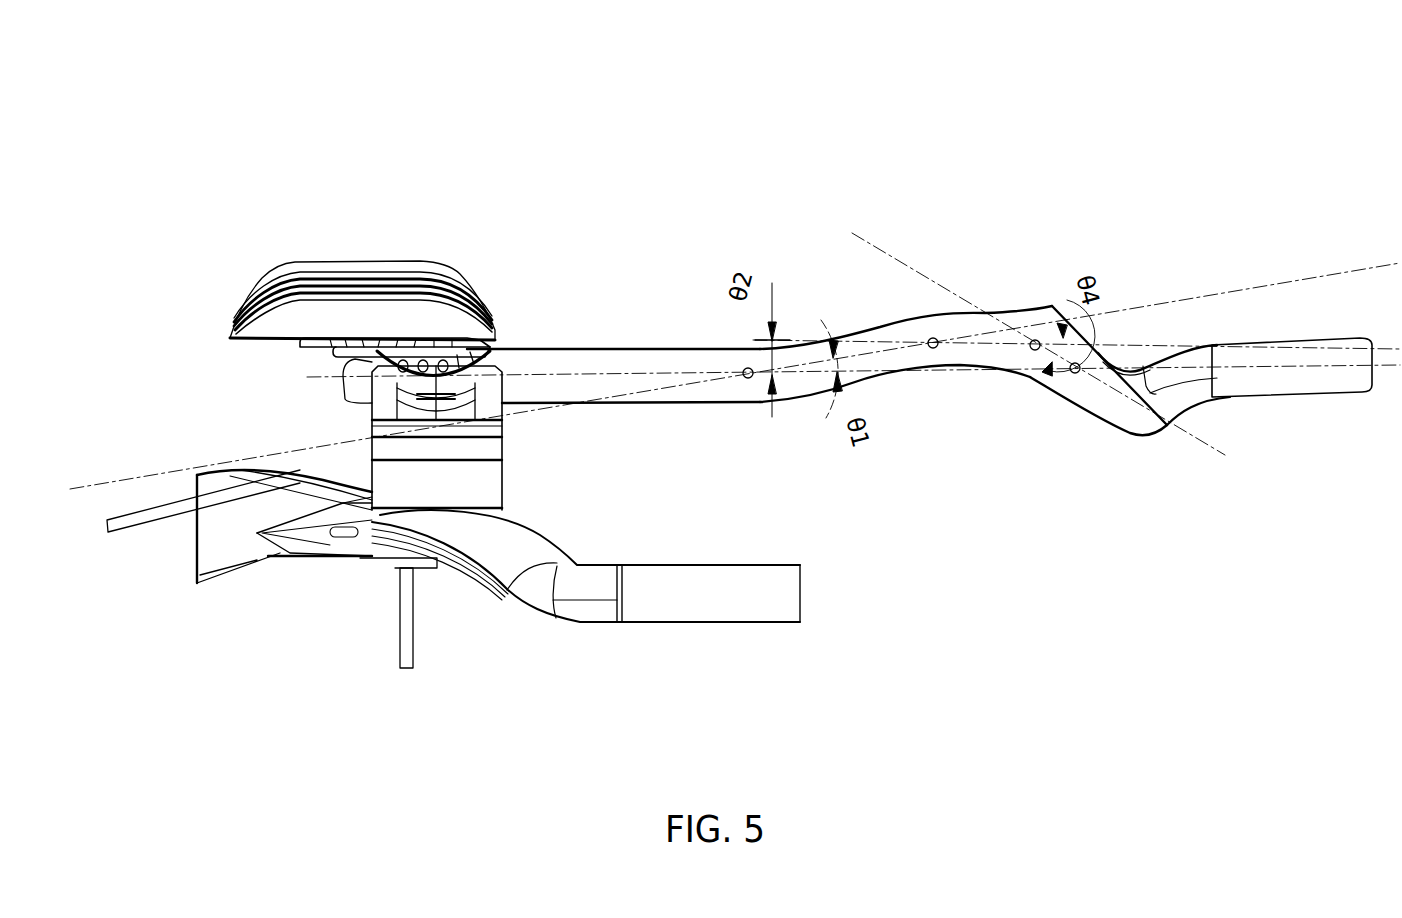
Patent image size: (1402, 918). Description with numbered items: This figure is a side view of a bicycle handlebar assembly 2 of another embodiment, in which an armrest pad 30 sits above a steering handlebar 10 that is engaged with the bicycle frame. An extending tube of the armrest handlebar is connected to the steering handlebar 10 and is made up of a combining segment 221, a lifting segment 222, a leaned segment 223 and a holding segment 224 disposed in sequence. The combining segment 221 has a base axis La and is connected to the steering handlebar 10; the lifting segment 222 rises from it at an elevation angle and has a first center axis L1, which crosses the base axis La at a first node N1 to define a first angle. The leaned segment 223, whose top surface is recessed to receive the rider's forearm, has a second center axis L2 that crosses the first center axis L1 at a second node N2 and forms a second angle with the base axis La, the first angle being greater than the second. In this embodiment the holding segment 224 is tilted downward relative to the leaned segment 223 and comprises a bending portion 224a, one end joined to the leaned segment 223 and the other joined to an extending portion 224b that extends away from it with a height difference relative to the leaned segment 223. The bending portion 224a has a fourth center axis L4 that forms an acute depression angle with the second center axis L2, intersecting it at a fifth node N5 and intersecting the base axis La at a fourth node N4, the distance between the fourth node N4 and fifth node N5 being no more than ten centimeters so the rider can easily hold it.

The bicycle handlebar assembly 2 is at (919, 301).
The steering handlebar 10 is at (688, 616).
The armrest pad 30 is at (390, 260).
The combining segment 221 is at (556, 358).
The lifting segment 222 is at (802, 365).
The leaned segment 223 is at (1027, 327).
The holding segment 224 is at (1260, 235).
The bending portion 224a is at (1148, 367).
The extending portion 224b is at (1293, 353).
The first node N1 is at (747, 379).
The second node N2 is at (931, 349).
The fourth node N4 is at (1077, 374).
The fifth node N5 is at (1038, 339).
The base axis La is at (650, 372).
The first center axis L1 is at (1132, 303).
The second center axis L2 is at (861, 341).
The fourth center axis L4 is at (1192, 440).